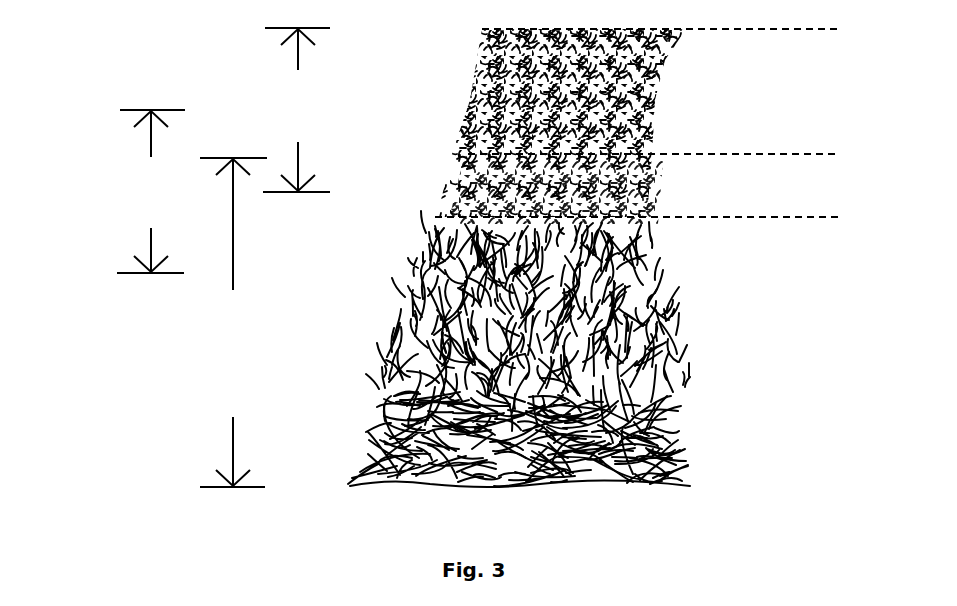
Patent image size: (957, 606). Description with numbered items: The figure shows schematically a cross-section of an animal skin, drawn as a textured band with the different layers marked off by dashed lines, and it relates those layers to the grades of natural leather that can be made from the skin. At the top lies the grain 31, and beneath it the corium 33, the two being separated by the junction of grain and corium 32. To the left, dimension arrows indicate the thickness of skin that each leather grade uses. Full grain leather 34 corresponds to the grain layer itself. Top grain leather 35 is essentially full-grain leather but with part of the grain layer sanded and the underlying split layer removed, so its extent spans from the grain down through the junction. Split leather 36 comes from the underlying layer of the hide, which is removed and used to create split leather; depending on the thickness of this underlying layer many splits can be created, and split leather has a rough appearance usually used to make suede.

The grain 31 is at (645, 91).
The junction of grain and corium 32 is at (636, 189).
The corium 33 is at (568, 349).
The full grain leather 34 is at (296, 110).
The top grain leather 35 is at (151, 191).
The split leather 36 is at (233, 322).